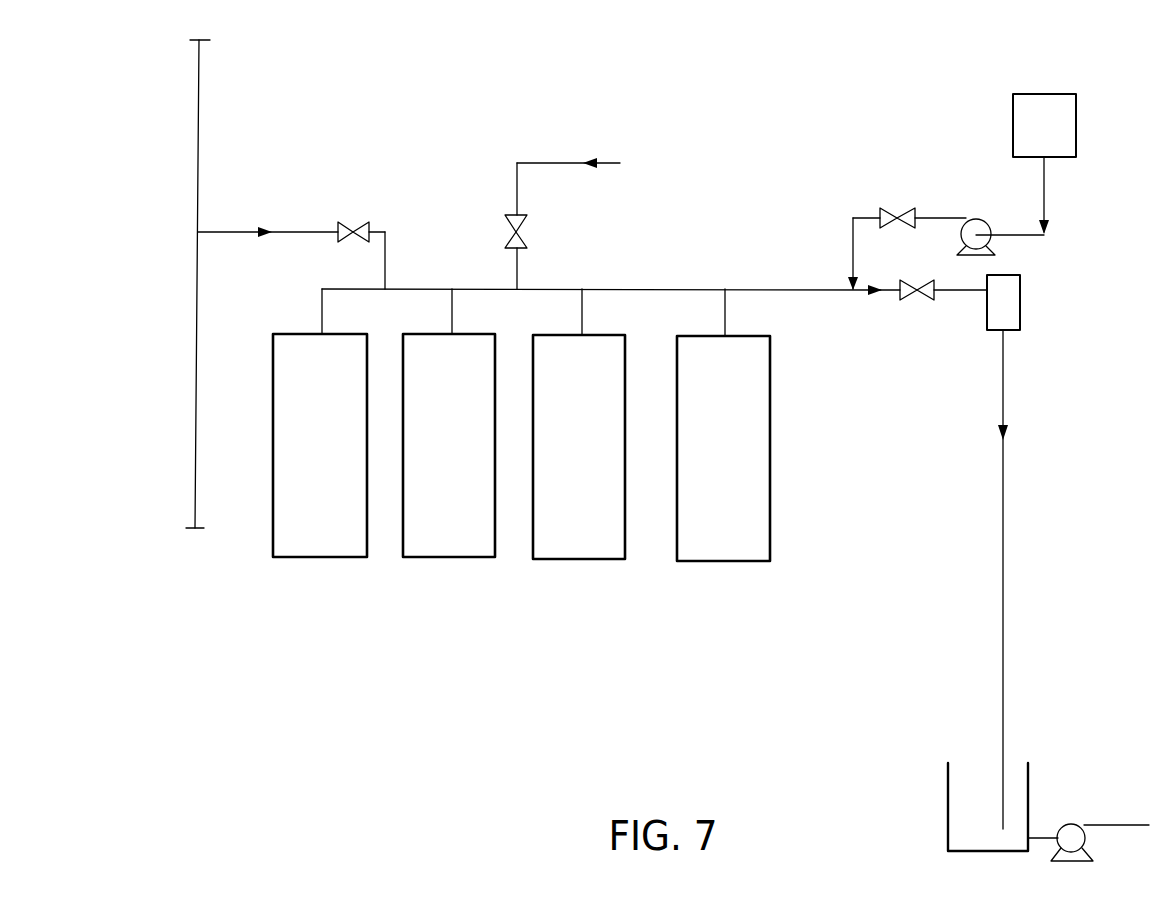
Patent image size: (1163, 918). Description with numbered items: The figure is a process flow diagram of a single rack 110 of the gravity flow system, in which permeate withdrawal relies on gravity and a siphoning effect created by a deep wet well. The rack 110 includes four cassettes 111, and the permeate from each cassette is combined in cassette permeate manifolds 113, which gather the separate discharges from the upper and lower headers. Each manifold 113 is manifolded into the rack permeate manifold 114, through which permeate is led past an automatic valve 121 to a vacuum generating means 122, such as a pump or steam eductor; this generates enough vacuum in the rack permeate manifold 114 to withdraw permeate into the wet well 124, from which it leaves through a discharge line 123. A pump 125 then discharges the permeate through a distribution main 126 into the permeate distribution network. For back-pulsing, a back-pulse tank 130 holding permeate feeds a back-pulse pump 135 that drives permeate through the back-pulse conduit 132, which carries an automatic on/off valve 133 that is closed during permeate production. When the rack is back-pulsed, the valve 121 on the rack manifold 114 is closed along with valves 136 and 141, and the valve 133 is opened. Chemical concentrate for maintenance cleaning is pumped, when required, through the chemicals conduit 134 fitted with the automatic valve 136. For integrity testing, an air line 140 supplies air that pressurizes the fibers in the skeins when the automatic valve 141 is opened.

The rack 110 is at (665, 265).
The cassettes 111 is at (320, 558).
The cassette permeate manifolds (CPMs) 113 is at (322, 318).
The rack permeate manifold (RPM) 114 is at (574, 289).
The automatic valve (AV) 121 is at (920, 302).
The vacuum generating means 122 is at (1020, 302).
The discharge line 123 is at (1046, 830).
The wet well 124 is at (947, 783).
The pump 125 is at (1056, 863).
The distribution main 126 is at (1124, 824).
The back-pulse tank 130 is at (1013, 123).
The back-pulse conduit 132 is at (948, 217).
The automatic on/off valve 133 is at (888, 207).
The chemicals conduit 134 is at (549, 162).
The back-pulse pump 135 is at (996, 252).
The automatic valve (AV) 136 is at (506, 222).
The air line 140 is at (199, 152).
The automatic valve (AV) 141 is at (346, 221).